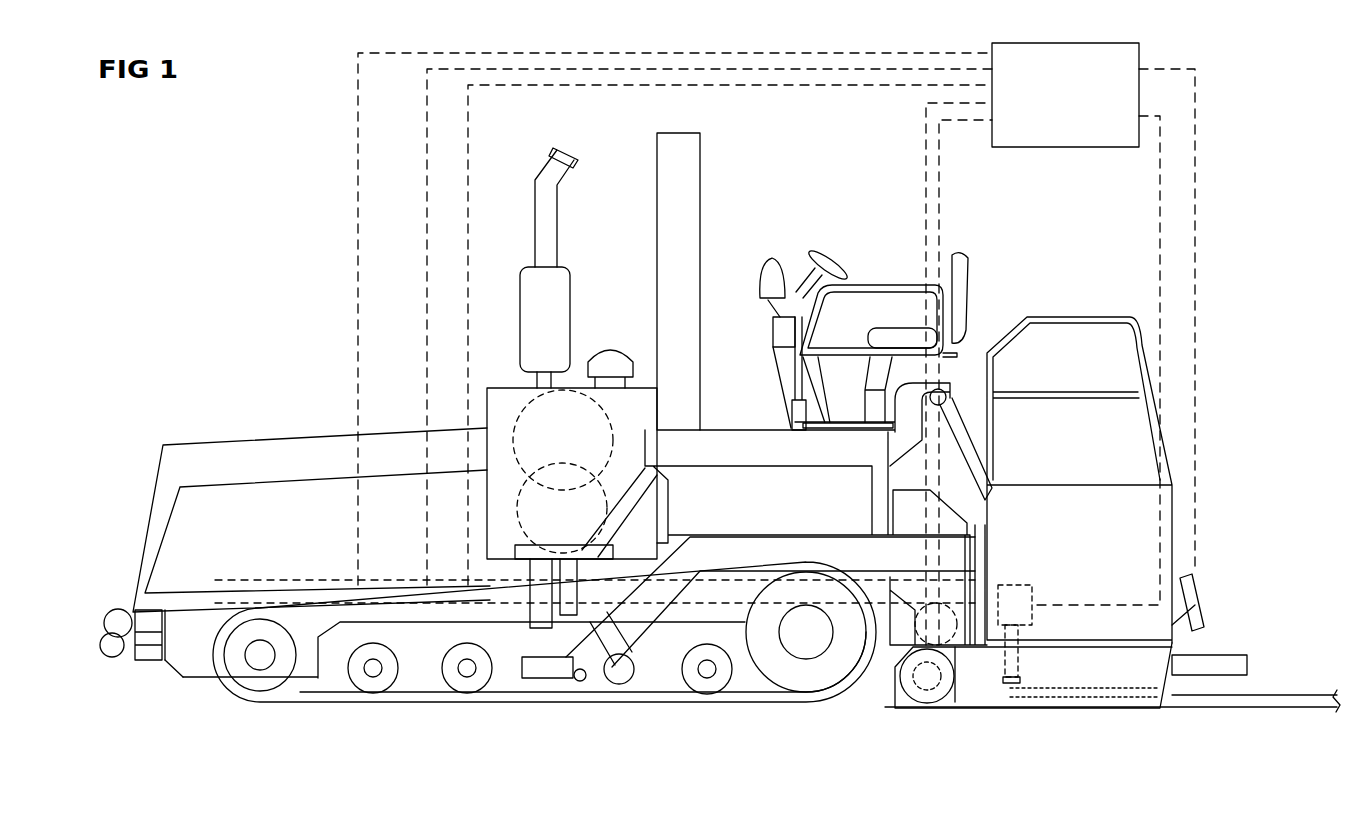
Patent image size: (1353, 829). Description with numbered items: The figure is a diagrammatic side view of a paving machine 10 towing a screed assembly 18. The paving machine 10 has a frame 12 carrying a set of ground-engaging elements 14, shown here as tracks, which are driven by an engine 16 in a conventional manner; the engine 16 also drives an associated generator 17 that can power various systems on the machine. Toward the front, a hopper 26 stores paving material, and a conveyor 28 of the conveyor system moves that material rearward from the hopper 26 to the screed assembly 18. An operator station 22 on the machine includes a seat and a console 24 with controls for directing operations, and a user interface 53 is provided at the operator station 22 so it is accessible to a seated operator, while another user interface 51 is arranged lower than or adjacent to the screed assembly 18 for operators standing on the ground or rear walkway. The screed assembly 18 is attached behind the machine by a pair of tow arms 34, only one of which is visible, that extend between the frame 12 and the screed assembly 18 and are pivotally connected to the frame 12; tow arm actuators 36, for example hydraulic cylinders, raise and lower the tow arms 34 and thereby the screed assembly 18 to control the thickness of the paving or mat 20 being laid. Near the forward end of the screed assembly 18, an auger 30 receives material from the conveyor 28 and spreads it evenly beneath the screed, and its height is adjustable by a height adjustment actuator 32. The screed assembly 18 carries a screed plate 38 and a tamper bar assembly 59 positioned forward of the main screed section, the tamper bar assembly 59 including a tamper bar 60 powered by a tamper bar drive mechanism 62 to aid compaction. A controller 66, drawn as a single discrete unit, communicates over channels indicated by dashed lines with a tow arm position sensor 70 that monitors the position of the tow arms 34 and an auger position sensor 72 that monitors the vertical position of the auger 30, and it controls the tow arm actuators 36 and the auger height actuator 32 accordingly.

The paving machine 10 is at (345, 178).
The frame 12 is at (756, 428).
The ground-engaging elements 14 is at (330, 705).
The engine 16 is at (530, 425).
The generator 17 is at (537, 500).
The screed assembly 18 is at (1215, 261).
The paving or mat 20 is at (1246, 712).
The operator station 22 is at (852, 228).
The console 24 is at (791, 228).
The hopper 26 is at (248, 438).
The conveyor 28 is at (643, 683).
The auger 30 is at (918, 700).
The height adjustment actuator 32 is at (995, 553).
The tow arm 34 is at (843, 553).
The tow arm actuator 36 is at (542, 620).
The screed plate 38 is at (1078, 700).
The user interface 51 is at (1198, 608).
The user interface 53 is at (800, 265).
The tamper bar assembly 59 is at (1075, 575).
The tamper bar 60 is at (1012, 686).
The tamper bar drive mechanism 62 is at (1027, 582).
The controller 66 is at (1077, 105).
The tow arm position sensor 70 is at (528, 596).
The auger position sensor 72 is at (951, 708).